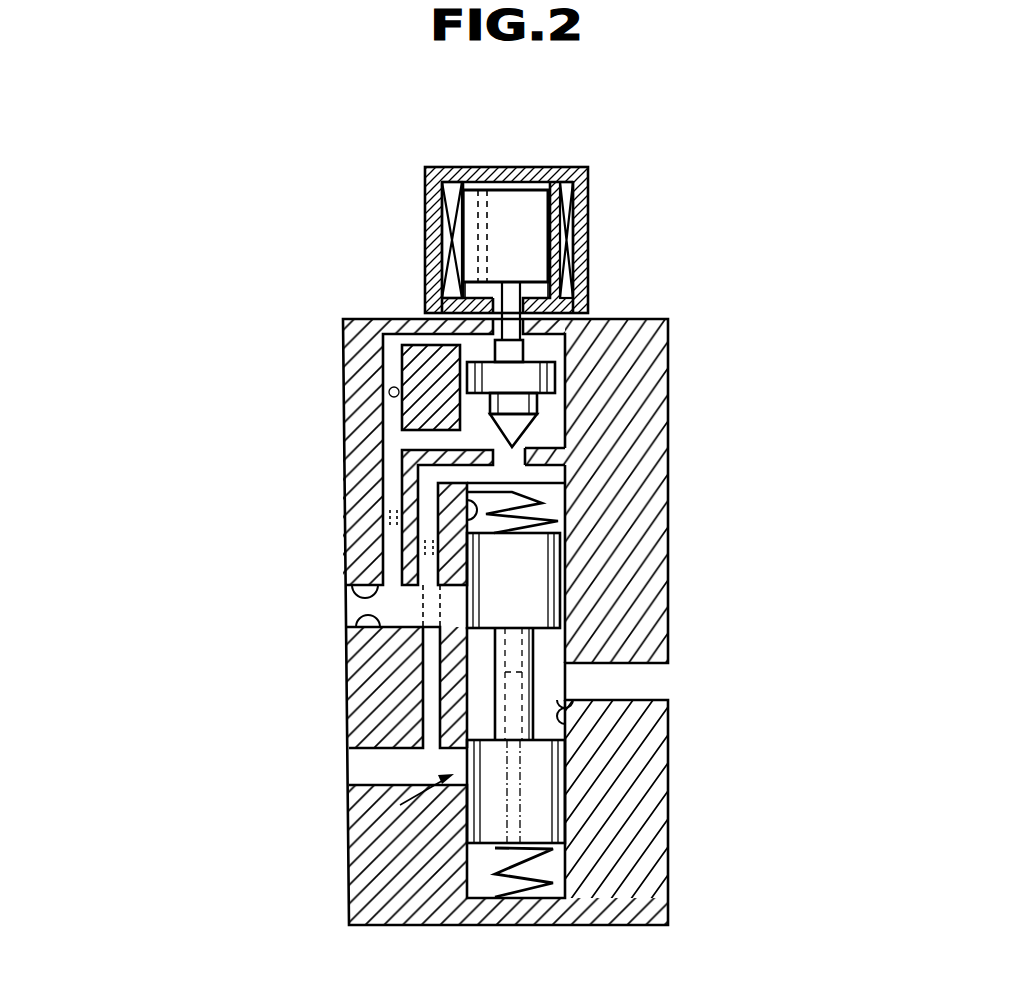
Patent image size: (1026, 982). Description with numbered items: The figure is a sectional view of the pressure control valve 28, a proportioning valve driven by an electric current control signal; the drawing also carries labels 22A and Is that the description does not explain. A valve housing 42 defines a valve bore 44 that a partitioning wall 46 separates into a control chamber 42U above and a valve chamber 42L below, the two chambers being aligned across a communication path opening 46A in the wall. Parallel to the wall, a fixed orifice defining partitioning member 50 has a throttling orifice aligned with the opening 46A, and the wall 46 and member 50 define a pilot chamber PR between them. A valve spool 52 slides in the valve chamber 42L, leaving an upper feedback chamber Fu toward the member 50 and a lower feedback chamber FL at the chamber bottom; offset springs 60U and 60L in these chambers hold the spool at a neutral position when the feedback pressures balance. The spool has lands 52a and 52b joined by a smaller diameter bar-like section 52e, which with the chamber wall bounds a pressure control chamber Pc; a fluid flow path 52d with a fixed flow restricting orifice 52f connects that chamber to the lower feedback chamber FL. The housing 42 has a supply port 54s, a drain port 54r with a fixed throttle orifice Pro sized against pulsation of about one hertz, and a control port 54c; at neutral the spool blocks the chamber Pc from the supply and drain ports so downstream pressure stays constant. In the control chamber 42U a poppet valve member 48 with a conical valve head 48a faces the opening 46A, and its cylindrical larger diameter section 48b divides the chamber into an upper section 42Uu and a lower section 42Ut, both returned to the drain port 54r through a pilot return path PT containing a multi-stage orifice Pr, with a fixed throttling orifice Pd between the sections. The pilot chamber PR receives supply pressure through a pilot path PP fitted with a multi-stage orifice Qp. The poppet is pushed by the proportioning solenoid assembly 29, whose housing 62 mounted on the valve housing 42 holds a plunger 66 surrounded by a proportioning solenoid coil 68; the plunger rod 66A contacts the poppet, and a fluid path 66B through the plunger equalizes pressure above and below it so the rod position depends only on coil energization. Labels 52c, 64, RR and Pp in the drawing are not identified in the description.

The pressure control valve 22A is at (686, 491).
The pressure control valve 28 is at (716, 260).
The proportioning solenoid assembly 29 is at (523, 225).
The valve housing 42 is at (402, 903).
The control chamber 42U is at (558, 380).
The upper section 42Uu is at (430, 323).
The lower section 42Ut is at (402, 415).
The valve chamber 42L is at (440, 528).
The valve bore 44 is at (565, 740).
The partitioning wall 46 is at (618, 393).
The communication path opening 46A is at (540, 403).
The poppet valve member 48 is at (625, 318).
The valve head 48a is at (405, 452).
The cylindrical larger diameter section 48b is at (660, 345).
The fixed orifice defining partitioning member 50 is at (560, 507).
The valve spool 52 is at (514, 755).
The land 52a is at (560, 800).
The land 52b is at (560, 567).
The spool rod 52c is at (548, 636).
The fluid flow path 52d is at (560, 830).
The smaller diameter bar-like section 52e is at (560, 672).
The fixed flow restricting orifice 52f is at (466, 868).
The control port 54c is at (672, 672).
The drain port 54r is at (345, 608).
The supply port 54s is at (372, 770).
The offset spring 60U is at (494, 538).
The offset spring 60L is at (488, 856).
The housing 62 is at (548, 170).
The solenoid spring 64 is at (586, 290).
The plunger 66 is at (480, 225).
The plunger rod 66A is at (511, 296).
The fluid path 66B is at (476, 192).
The proportioning solenoid coil 68 is at (428, 196).
The solenoid current Is is at (426, 239).
The ring chamber RR is at (402, 375).
The fixed throttling orifice Pd is at (389, 392).
The pilot return path PT is at (392, 490).
The multi-stage orifice Pr is at (386, 514).
The multi-stage orifice Qp is at (420, 560).
The fixed throttle orifice Pro is at (366, 610).
The pilot path PP is at (428, 690).
The pilot pressure Pp is at (498, 478).
The pilot chamber PR is at (565, 462).
The upper feedback chamber Fu is at (558, 530).
The pressure control chamber Pc is at (560, 768).
The lower feedback chamber FL is at (560, 878).